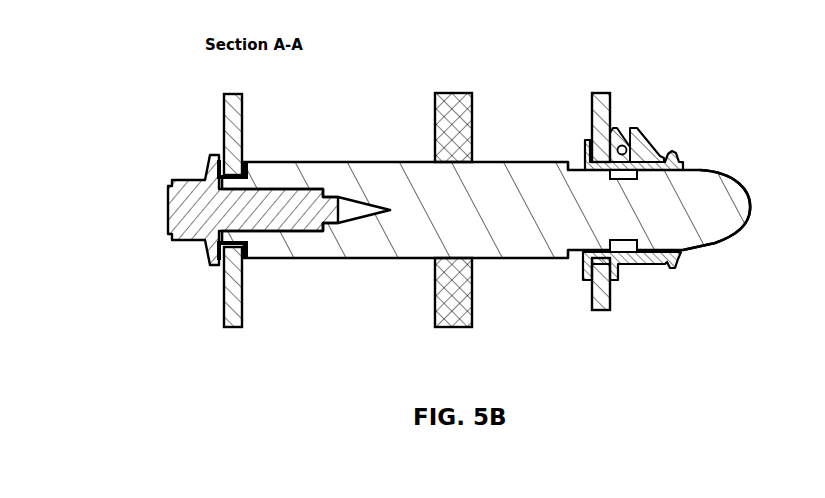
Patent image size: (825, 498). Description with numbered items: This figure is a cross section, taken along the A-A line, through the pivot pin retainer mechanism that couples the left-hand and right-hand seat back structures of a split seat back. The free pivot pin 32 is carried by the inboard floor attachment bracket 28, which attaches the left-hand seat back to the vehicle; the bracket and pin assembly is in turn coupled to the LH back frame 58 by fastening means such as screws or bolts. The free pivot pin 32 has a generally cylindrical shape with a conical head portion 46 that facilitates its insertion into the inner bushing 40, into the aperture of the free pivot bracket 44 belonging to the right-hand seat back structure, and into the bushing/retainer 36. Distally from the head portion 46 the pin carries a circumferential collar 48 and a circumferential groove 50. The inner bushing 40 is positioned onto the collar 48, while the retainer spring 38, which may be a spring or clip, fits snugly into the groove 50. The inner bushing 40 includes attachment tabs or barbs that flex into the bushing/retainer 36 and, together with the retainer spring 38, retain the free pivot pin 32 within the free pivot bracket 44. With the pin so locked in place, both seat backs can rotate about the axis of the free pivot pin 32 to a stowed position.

The inboard floor attachment bracket 28 is at (440, 302).
The free pivot pin 32 is at (338, 258).
The bushing/retainer 36 is at (652, 147).
The retainer spring 38 is at (633, 128).
The inner bushing 40 is at (673, 267).
The free pivot bracket 44 is at (593, 282).
The conical head portion 46 is at (703, 215).
The circumferential collar 48 is at (568, 162).
The circumferential groove 50 is at (638, 179).
The LH back frame 58 is at (222, 277).